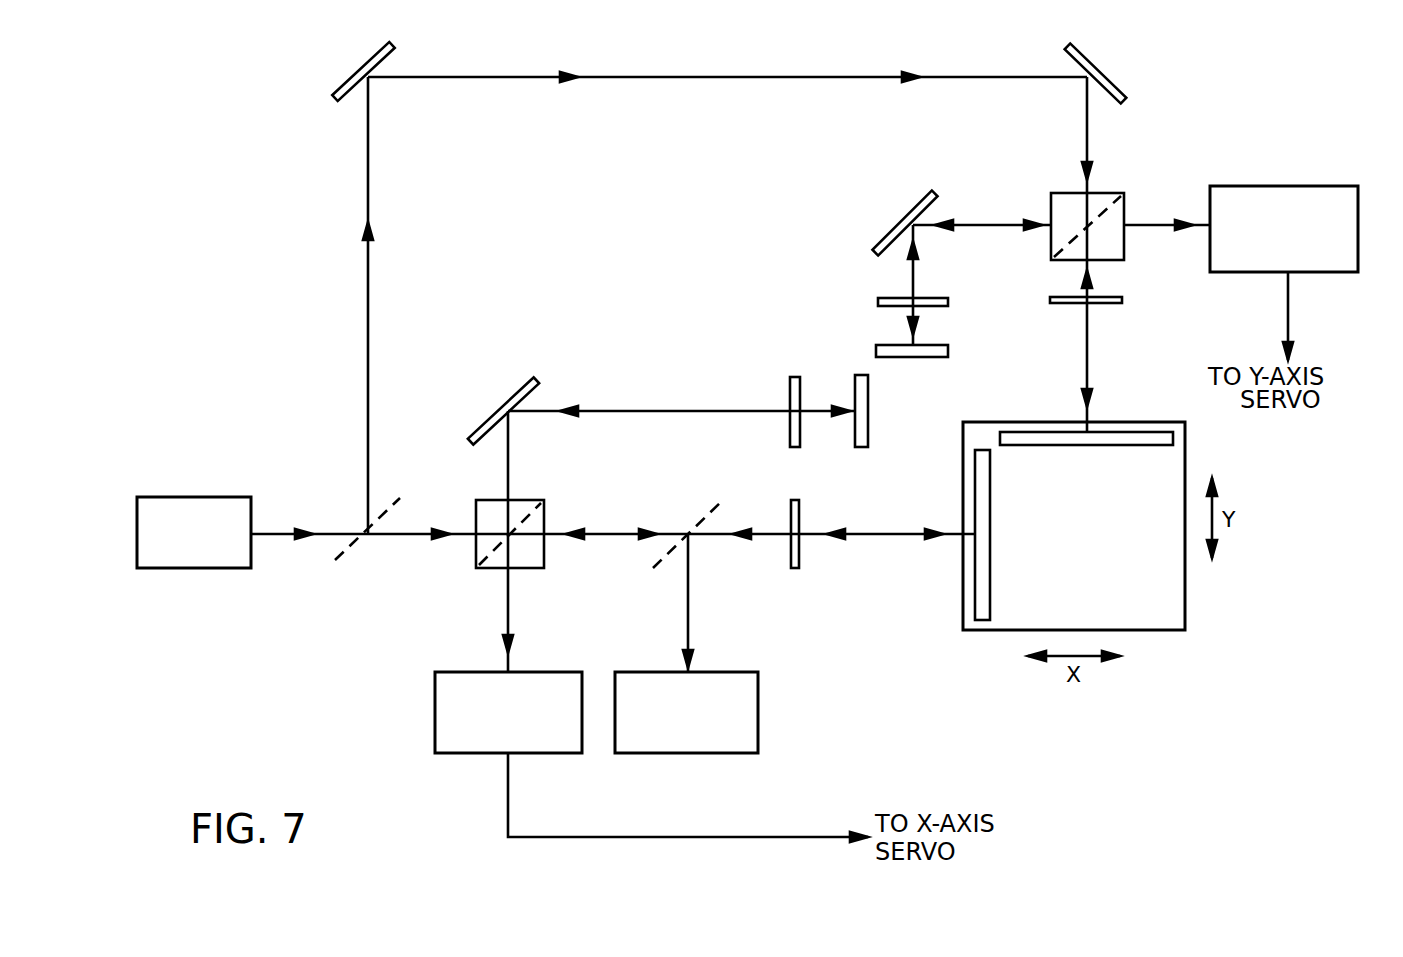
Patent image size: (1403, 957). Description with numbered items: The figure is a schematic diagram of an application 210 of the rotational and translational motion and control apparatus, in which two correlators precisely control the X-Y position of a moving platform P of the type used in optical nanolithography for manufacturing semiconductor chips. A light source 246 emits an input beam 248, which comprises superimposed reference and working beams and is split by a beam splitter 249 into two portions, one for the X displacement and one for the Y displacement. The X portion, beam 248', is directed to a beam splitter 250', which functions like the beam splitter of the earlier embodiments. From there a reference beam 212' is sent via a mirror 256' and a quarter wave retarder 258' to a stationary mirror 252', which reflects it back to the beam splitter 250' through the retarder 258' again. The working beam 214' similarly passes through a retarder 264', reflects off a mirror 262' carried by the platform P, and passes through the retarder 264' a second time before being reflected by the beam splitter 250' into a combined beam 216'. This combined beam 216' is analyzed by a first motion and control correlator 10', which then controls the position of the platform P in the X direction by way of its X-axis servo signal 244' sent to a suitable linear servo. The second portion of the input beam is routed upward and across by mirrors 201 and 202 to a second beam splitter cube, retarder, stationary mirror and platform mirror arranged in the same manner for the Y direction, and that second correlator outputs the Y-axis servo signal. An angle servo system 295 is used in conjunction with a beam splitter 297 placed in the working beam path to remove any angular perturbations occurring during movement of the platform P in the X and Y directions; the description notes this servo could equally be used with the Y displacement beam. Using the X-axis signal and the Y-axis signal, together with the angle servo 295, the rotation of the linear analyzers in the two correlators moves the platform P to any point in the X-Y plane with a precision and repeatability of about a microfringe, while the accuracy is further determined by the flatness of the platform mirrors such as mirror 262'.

The mirror 201 is at (360, 60).
The mirror 202 is at (1090, 64).
The application 210 is at (290, 204).
The laser source 246 is at (200, 497).
The input beam 248 is at (613, 509).
The beam 248' is at (417, 571).
The beam splitter 249 is at (335, 562).
The beam splitter 250' is at (536, 556).
The mirror 256' is at (494, 401).
The quarter wave retarder 258' is at (768, 391).
The stationary mirror 252' is at (904, 411).
The reference beam 212' is at (681, 394).
The working beam 214' is at (725, 603).
The combined beam 216' is at (550, 541).
The retarder 264' is at (789, 558).
The mirror 262' is at (936, 535).
The platform P is at (1200, 593).
The first motion and control correlator 10' is at (473, 712).
The X-axis servo signal 244' is at (688, 797).
The beam splitter 297 is at (720, 503).
The angle servo system 295 is at (758, 692).